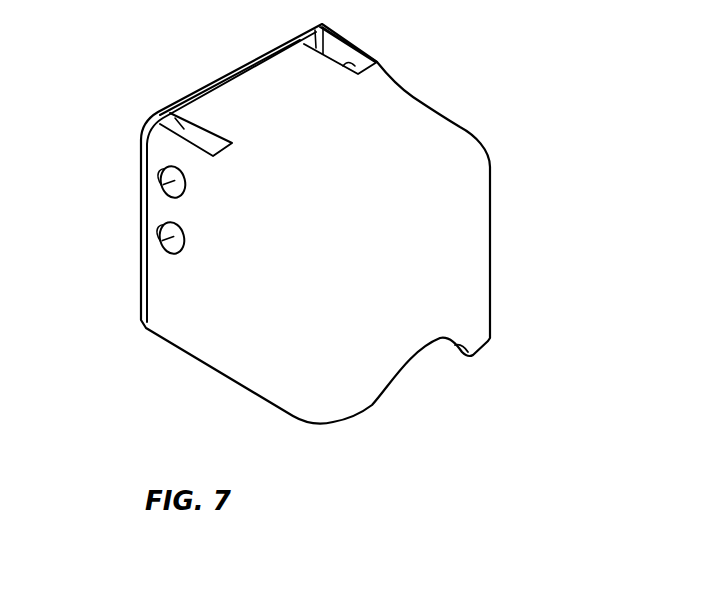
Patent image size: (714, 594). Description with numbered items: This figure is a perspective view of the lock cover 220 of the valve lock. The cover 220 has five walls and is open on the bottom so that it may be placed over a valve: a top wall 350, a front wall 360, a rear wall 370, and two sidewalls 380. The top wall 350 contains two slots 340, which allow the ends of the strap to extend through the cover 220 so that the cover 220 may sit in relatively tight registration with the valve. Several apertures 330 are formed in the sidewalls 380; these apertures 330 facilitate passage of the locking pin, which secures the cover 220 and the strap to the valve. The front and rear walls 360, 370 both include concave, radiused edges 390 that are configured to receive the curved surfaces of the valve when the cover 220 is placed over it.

The cover 220 is at (334, 224).
The apertures 330 is at (162, 178).
The slots 340 is at (168, 116).
The top wall 350 is at (336, 123).
The front wall 360 is at (429, 273).
The rear wall 370 is at (165, 93).
The sidewalls 380 is at (271, 297).
The concave, radiused edges 390 is at (432, 395).